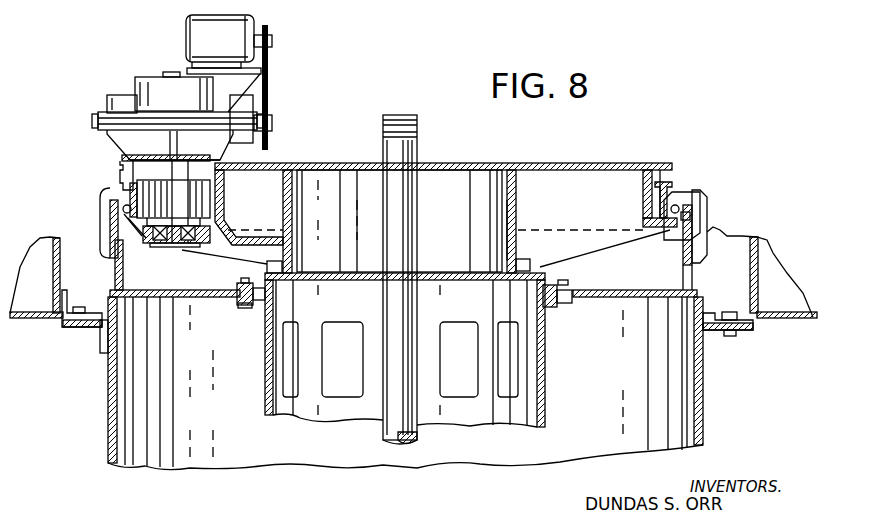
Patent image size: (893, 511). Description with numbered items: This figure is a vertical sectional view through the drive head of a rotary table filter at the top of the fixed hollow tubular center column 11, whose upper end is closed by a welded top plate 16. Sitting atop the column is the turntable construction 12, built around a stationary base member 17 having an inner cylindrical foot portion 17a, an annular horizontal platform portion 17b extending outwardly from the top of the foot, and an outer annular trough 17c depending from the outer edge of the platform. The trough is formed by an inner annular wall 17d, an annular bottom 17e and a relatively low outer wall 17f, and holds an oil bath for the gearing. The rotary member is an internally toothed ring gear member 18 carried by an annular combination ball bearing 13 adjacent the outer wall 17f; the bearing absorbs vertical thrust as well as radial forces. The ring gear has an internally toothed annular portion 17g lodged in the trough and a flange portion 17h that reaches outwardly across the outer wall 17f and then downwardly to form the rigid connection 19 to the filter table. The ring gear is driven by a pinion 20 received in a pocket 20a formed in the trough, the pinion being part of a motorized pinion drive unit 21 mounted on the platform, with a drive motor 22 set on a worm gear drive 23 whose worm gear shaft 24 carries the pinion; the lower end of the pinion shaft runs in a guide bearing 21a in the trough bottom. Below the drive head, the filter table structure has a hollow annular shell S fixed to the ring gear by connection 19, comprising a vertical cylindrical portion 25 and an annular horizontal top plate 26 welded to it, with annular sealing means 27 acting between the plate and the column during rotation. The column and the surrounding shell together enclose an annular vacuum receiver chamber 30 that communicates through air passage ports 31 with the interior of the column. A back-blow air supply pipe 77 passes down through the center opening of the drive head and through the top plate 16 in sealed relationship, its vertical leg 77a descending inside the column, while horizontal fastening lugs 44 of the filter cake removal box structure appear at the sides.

The center column 11 is at (546, 376).
The turntable construction 12 is at (78, 190).
The annular combination ball bearing 13 is at (108, 213).
The top plate 16 is at (456, 272).
The stationary base member 17 is at (510, 163).
The inner cylindrical foot portion 17a is at (508, 228).
The annular horizontal platform portion 17b is at (562, 163).
The outer annular trough 17c is at (234, 240).
The inner annular wall 17d is at (645, 190).
The annular bottom 17e is at (665, 224).
The outer wall 17f is at (695, 218).
The internally toothed annular portion 17g is at (664, 184).
The flange portion 17h is at (702, 191).
The ring gear member 18 is at (675, 193).
The rigid connection 19 is at (705, 252).
The pinion 20 is at (172, 200).
The pocket 20a is at (228, 186).
The motorized pinion drive unit 21 is at (117, 62).
The guide bearing 21a is at (185, 249).
The drive motor 22 is at (234, 49).
The worm gear drive 23 is at (105, 100).
The worm gear shaft 24 is at (180, 190).
The vertical cylindrical portion 25 is at (107, 388).
The annular horizontal top plate 26 is at (612, 290).
The annular sealing means 27 is at (237, 284).
The annular vacuum receiver chamber 30 is at (228, 416).
The air passage ports 31 is at (325, 380).
The fastening lugs 44 is at (70, 307).
The air supply pipe 77 is at (419, 143).
The vertical leg 77a is at (405, 333).
The annular shell S is at (700, 297).